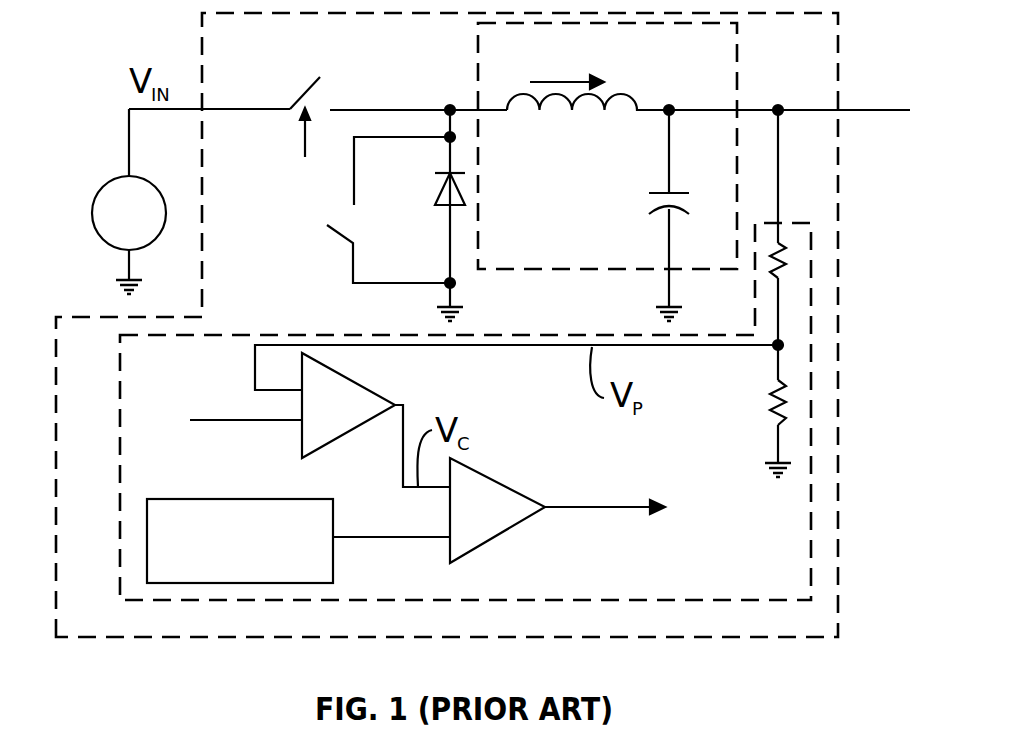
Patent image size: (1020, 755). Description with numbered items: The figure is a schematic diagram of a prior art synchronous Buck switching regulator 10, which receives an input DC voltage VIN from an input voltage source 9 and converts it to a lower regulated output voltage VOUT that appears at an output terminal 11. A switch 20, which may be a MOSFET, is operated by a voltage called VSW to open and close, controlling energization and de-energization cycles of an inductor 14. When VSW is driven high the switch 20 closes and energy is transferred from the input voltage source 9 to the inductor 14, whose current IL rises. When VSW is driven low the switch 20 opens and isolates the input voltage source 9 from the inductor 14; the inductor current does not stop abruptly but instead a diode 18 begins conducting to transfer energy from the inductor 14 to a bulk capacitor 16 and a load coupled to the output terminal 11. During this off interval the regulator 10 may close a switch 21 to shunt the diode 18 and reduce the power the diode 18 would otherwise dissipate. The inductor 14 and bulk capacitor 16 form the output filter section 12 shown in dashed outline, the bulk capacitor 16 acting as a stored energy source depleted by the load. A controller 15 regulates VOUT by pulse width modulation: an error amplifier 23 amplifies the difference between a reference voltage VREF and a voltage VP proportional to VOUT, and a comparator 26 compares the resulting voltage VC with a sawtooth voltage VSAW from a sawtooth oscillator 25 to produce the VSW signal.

The input voltage source 9 is at (114, 178).
The synchronous Buck switching regulator 10 is at (839, 254).
The output terminal 11 is at (870, 114).
The LC filter 12 is at (738, 52).
The inductor 14 is at (537, 114).
The controller 15 is at (566, 334).
The bulk capacitor 16 is at (680, 192).
The diode 18 is at (435, 203).
The switch 20 is at (315, 74).
The switch 21 is at (342, 246).
The error amplifier 23 is at (332, 446).
The sawtooth oscillator 25 is at (163, 499).
The comparator 26 is at (490, 478).